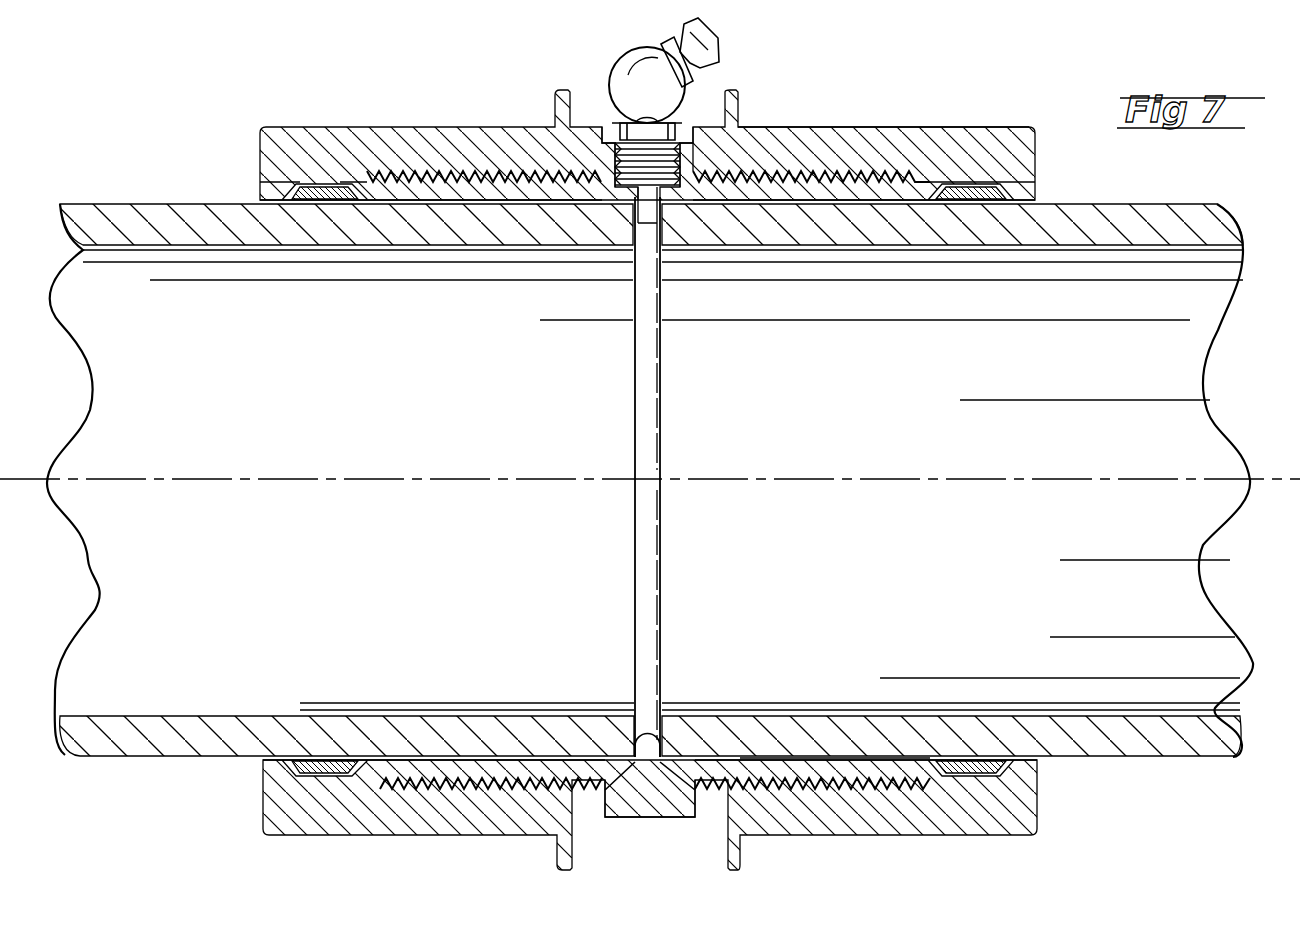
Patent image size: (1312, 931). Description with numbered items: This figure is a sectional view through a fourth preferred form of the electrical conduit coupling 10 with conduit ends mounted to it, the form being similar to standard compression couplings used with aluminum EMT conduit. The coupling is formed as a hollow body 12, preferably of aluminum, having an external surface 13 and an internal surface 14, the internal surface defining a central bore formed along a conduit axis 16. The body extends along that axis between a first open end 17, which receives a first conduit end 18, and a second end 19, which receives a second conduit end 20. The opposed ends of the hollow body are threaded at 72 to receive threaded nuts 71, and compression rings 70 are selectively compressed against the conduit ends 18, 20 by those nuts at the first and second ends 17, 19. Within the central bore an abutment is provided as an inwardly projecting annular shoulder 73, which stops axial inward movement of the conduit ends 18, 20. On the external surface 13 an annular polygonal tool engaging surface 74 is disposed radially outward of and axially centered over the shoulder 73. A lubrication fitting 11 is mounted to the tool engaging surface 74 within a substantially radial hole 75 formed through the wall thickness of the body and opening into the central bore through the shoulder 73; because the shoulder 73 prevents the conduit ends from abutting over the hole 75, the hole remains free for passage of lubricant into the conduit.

The electrical conduit coupling 10 is at (772, 66).
The lubrication fitting 11 is at (620, 47).
The hollow body 12 is at (678, 830).
The external surface 13 is at (712, 178).
The internal surface 14 is at (813, 756).
The conduit axis 16 is at (342, 490).
The first open end 17 is at (406, 192).
The first conduit end 18 is at (636, 612).
The second end 19 is at (874, 192).
The second conduit end 20 is at (660, 500).
The compression rings 70 is at (312, 198).
The threaded nuts 71 is at (408, 152).
The threads 72 is at (782, 170).
The annular shoulder 73 is at (645, 425).
The annular polygonal tool engaging surface 74 is at (610, 142).
The radial hole 75 is at (660, 215).